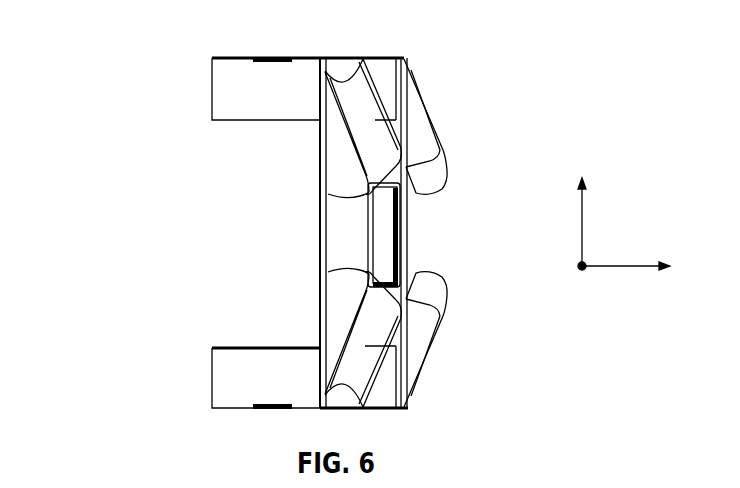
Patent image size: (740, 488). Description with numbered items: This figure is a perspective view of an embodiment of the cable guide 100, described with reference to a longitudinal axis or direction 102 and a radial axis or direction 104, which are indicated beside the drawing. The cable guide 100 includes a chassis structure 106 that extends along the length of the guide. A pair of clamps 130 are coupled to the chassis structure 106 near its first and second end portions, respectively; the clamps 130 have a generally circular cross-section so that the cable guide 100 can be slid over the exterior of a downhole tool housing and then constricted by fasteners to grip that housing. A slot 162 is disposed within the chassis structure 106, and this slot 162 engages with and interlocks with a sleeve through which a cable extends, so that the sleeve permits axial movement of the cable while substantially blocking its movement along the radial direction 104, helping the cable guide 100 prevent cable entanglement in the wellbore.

The cable guide 100 is at (274, 211).
The clamps 130 is at (227, 72).
The slot 162 is at (383, 229).
The chassis structure 106 is at (407, 272).
The longitudinal axis or direction 102 is at (585, 222).
The radial axis or direction 104 is at (627, 265).